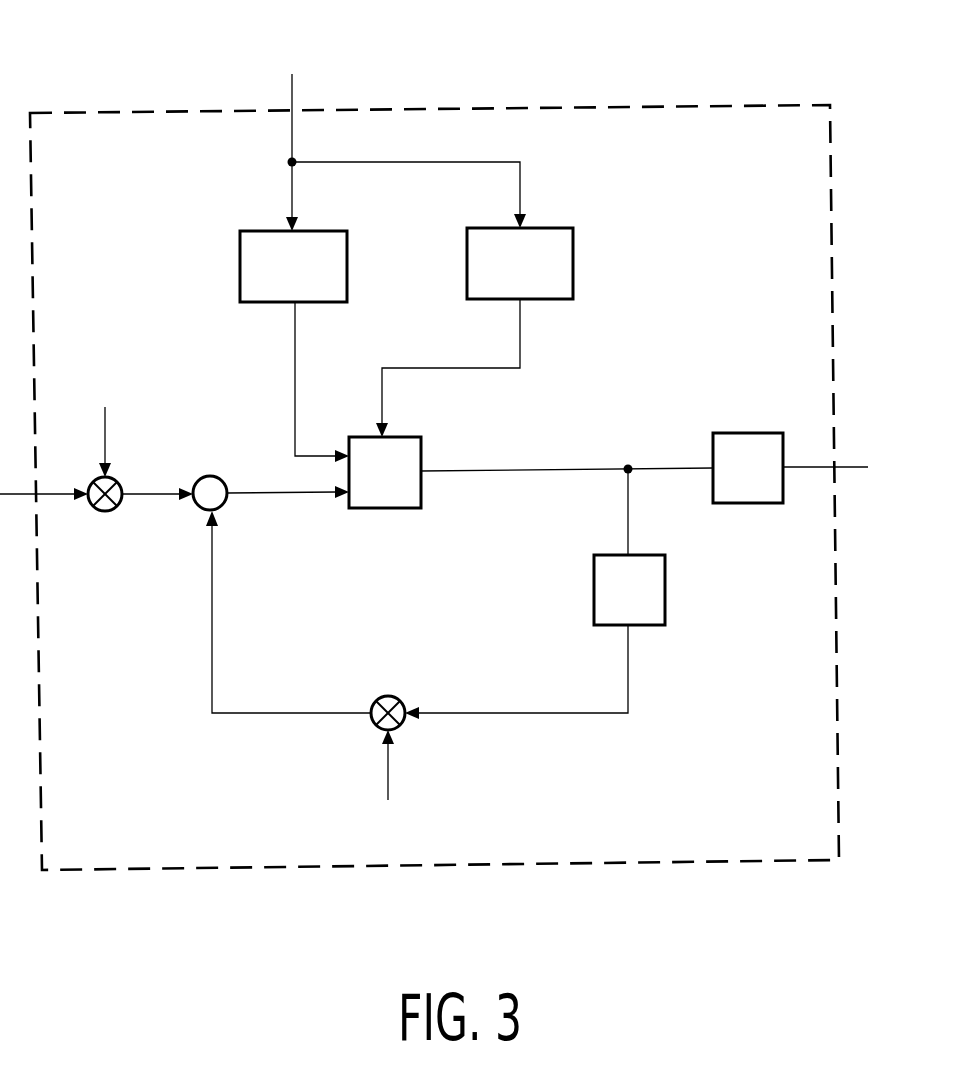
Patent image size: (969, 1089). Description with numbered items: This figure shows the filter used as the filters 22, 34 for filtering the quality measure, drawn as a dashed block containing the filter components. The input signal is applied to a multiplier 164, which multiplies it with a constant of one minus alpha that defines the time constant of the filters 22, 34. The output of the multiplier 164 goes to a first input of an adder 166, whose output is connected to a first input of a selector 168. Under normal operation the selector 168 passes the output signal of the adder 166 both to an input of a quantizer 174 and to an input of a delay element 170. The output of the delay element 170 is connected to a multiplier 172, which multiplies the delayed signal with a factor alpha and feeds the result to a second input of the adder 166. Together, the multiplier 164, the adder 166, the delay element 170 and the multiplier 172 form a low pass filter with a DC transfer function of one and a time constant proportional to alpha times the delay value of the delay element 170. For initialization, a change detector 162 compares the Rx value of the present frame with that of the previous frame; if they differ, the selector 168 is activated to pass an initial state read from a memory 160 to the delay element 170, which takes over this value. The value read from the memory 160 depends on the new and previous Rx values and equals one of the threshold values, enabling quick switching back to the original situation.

The filter 34 is at (434, 445).
The filter 22 is at (108, 110).
The memory 160 is at (240, 266).
The change detector 162 is at (573, 262).
The multiplier 164 is at (104, 512).
The adder 166 is at (211, 476).
The selector 168 is at (378, 510).
The delay element 170 is at (594, 587).
The multiplier 172 is at (388, 696).
The quantizer 174 is at (743, 432).